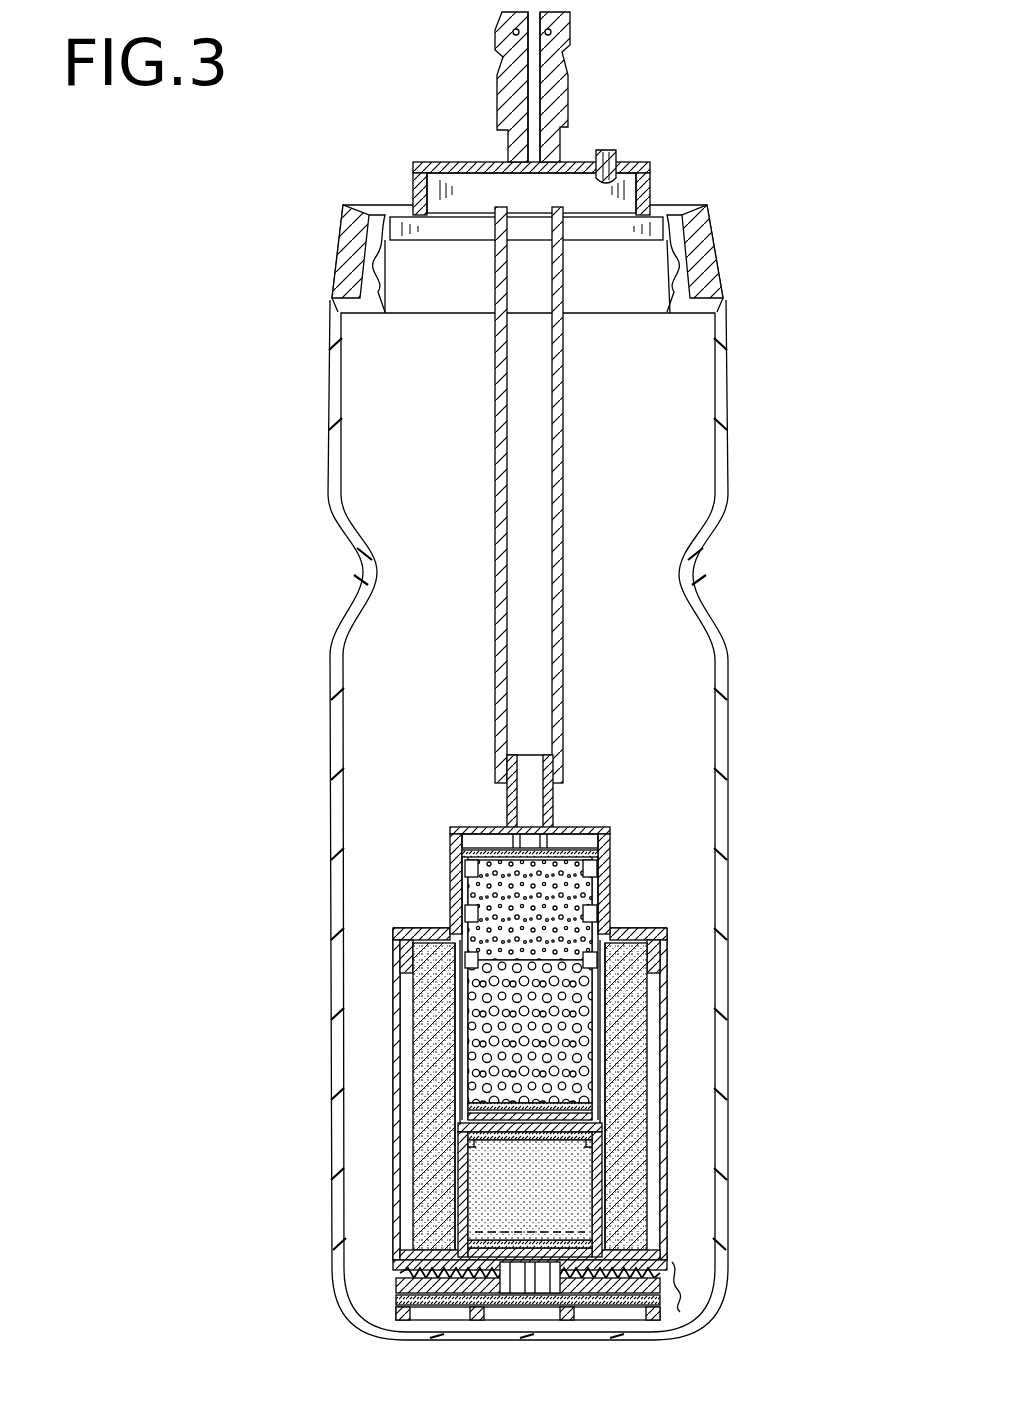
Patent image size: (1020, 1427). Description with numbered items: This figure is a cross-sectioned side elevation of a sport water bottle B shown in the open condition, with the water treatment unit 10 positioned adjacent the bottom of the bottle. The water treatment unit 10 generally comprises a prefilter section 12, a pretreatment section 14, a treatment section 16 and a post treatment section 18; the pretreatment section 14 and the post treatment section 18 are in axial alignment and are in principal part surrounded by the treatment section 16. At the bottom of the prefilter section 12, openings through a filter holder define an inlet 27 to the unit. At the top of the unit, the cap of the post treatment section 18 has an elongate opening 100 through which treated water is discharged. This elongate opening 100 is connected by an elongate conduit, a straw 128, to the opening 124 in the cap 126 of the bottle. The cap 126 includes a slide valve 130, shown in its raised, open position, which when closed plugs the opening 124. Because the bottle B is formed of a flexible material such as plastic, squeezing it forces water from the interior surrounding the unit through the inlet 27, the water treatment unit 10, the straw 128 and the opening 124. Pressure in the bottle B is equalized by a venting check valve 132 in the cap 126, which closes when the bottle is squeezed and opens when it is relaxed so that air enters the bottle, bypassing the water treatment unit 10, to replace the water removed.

The sport water bottle B is at (728, 440).
The cap 126 is at (660, 205).
The slide valve 130 is at (572, 22).
The opening 124 is at (533, 112).
The venting check valve 132 is at (618, 156).
The straw 128 is at (565, 677).
The elongate opening 100 is at (553, 808).
The water treatment unit 10 is at (680, 1030).
The treatment section 16 is at (405, 1103).
The post treatment section 18 is at (497, 892).
The pretreatment section 14 is at (580, 1190).
The prefilter section 12 is at (692, 1288).
The inlet 27 is at (455, 1320).